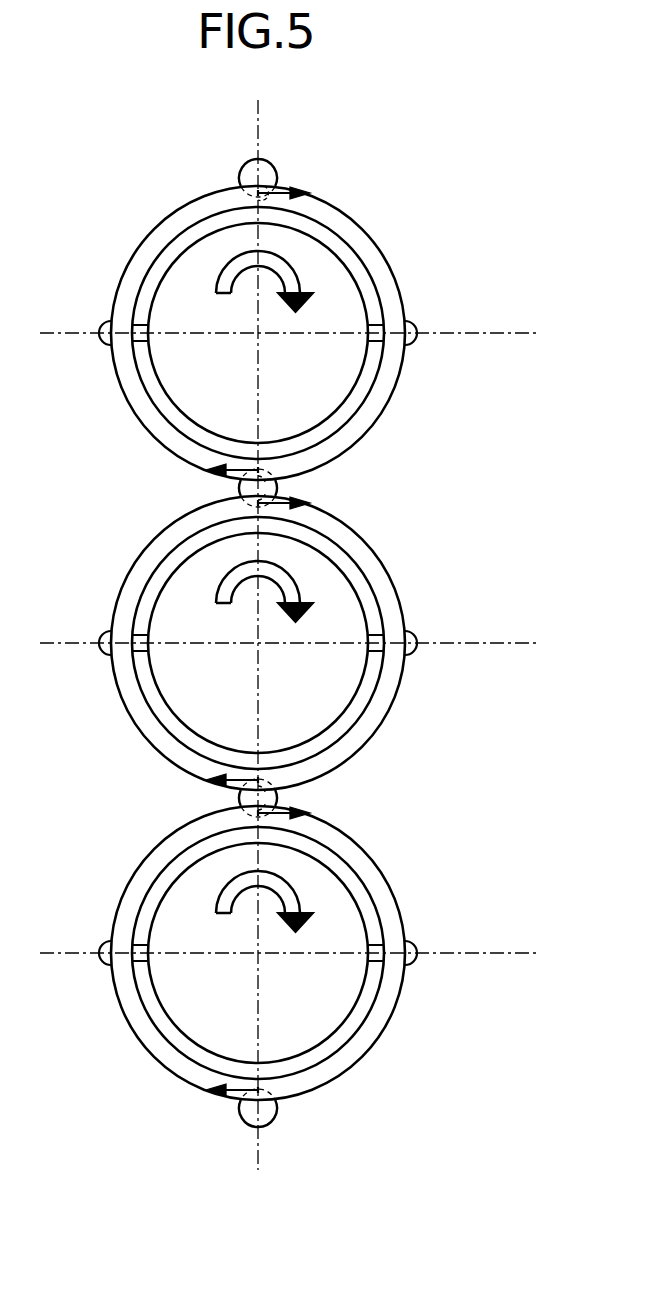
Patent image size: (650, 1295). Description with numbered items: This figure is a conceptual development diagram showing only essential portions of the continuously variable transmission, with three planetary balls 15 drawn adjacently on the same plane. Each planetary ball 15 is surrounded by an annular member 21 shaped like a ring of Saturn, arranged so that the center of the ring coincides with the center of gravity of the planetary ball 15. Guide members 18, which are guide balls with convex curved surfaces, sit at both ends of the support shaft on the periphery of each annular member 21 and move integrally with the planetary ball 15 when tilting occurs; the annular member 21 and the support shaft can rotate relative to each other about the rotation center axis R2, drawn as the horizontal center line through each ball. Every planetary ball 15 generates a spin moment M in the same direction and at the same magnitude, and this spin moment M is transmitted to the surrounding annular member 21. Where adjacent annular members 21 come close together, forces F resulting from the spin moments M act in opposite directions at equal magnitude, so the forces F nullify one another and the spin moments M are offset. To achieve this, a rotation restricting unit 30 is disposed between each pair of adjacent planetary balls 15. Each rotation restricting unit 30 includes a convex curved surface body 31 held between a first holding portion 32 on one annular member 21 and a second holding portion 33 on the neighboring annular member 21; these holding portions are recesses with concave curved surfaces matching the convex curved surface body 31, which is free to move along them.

The planetary ball 15 is at (366, 380).
The guide member 18 is at (104, 321).
The annular member 21 is at (404, 383).
The rotation restricting unit 30 is at (115, 483).
The convex curved surface body 31 is at (244, 167).
The first holding portion 32 is at (278, 480).
The second holding portion 33 is at (281, 176).
The force F is at (304, 199).
The spin moment M is at (296, 262).
The rotation center axis R2 is at (484, 330).